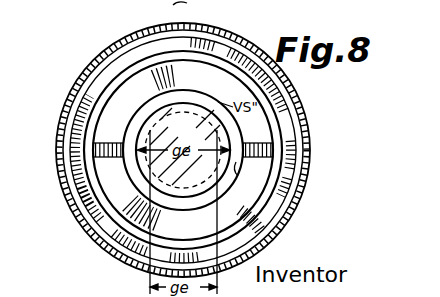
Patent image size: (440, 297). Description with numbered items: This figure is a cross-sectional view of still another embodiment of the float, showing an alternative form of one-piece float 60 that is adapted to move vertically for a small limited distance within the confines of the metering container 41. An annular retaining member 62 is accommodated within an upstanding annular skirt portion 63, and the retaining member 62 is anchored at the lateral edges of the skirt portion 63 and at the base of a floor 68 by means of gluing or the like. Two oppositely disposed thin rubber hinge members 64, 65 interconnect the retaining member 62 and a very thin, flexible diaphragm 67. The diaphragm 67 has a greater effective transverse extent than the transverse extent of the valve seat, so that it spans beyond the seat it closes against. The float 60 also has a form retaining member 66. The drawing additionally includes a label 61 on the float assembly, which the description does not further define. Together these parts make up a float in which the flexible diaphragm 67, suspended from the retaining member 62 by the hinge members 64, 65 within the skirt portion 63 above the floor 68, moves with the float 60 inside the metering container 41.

The metering container 41 is at (100, 61).
The one-piece float 60 is at (132, 181).
The flange 61 is at (137, 218).
The annular retaining member 62 is at (244, 82).
The upstanding annular skirt portion 63 is at (221, 30).
The thin rubber hinge member 64 is at (240, 161).
The thin rubber hinge member 65 is at (109, 140).
The form retaining member 66 is at (174, 97).
The flexible diaphragm 67 is at (163, 208).
The floor 68 is at (240, 203).